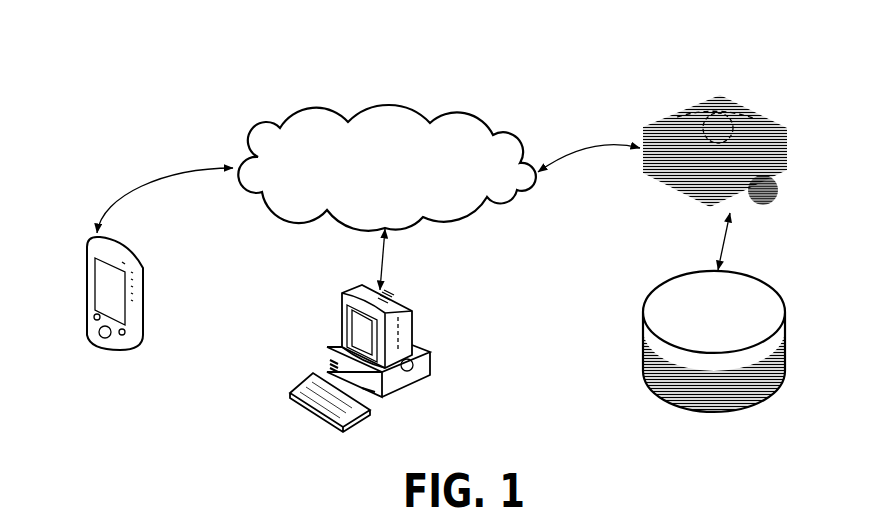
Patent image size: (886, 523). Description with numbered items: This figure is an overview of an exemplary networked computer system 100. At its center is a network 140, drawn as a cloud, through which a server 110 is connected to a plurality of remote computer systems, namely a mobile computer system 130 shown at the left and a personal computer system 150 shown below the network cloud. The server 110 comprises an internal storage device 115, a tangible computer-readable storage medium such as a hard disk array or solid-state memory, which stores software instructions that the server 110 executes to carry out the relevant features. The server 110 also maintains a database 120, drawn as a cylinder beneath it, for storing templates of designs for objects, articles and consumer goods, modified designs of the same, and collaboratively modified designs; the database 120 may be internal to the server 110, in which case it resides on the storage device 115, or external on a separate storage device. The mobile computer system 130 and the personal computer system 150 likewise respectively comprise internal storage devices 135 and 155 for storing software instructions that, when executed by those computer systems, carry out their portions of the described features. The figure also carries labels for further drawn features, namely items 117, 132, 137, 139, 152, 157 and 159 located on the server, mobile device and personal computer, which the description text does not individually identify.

The networked computer system 100 is at (65, 35).
The server 110 is at (717, 97).
The internal storage device 115 is at (753, 118).
The server 117 is at (714, 132).
The database 120 is at (645, 320).
The mobile computer system 130 is at (126, 289).
The mobile device button 132 is at (95, 315).
The internal storage device 135 is at (143, 322).
The mobile device camera/sensor 137 is at (143, 267).
The mobile device display 139 is at (110, 285).
The network 140 is at (483, 120).
The personal computer system 150 is at (364, 338).
The keyboard 152 is at (310, 382).
The internal storage device 155 is at (430, 353).
The computer port 157 is at (400, 310).
The computer display 159 is at (363, 338).